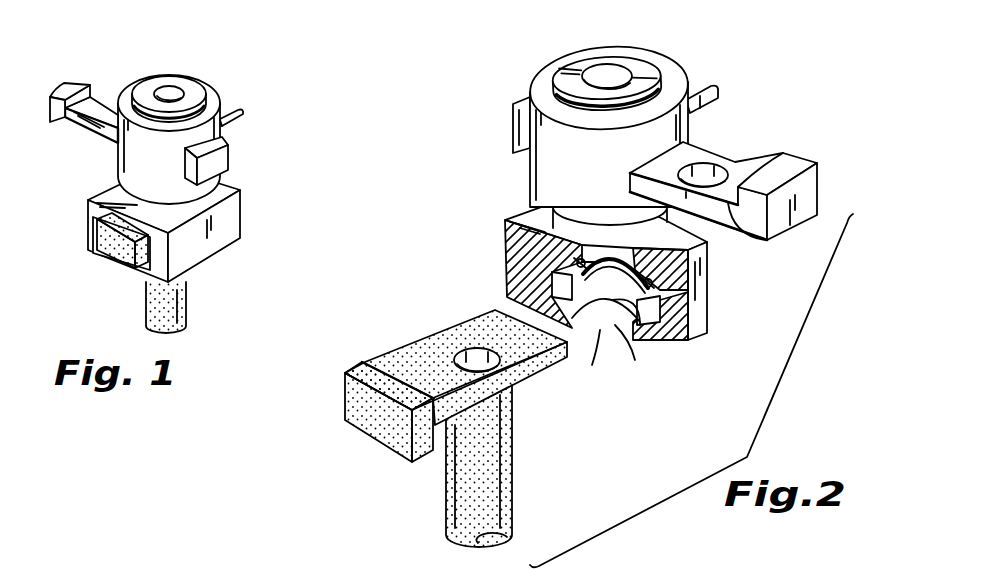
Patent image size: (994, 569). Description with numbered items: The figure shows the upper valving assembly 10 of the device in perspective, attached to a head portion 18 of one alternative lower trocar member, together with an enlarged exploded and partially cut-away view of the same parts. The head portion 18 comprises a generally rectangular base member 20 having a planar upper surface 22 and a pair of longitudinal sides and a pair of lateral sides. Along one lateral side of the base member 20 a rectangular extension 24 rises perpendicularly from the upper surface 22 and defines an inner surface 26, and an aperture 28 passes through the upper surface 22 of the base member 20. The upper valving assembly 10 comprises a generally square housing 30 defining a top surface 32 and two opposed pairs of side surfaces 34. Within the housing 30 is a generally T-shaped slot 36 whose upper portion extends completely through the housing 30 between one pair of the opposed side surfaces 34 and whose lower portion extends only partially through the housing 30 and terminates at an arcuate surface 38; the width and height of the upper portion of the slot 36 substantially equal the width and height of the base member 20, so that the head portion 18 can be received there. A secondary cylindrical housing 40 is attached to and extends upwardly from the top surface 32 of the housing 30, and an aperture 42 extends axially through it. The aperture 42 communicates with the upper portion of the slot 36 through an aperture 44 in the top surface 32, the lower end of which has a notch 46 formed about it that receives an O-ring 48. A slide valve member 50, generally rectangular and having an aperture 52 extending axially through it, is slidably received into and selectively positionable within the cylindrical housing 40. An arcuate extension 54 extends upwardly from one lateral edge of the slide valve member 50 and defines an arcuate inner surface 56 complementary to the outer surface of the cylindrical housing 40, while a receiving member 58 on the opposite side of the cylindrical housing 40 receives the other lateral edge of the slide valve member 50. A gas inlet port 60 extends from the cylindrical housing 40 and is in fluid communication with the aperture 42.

In FIG. 1, the upper valving assembly 10 is at (286, 122).
In FIG. 2, the upper valving assembly 10 is at (766, 84).
In FIG. 2, the head portion 18 is at (434, 321).
In FIG. 2, the base member 20 is at (538, 381).
In FIG. 2, the upper surface 22 is at (423, 365).
In FIG. 1, the rectangular extension 24 is at (110, 247).
In FIG. 2, the rectangular extension 24 is at (350, 368).
In FIG. 1, the inner surface 26 is at (166, 307).
In FIG. 2, the inner surface 26 is at (514, 421).
In FIG. 2, the aperture 28 is at (473, 350).
In FIG. 1, the housing 30 is at (242, 213).
In FIG. 2, the housing 30 is at (681, 340).
In FIG. 1, the top surface 32 is at (112, 193).
In FIG. 2, the top surface 32 is at (530, 212).
In FIG. 1, the side surfaces 34 is at (200, 249).
In FIG. 2, the side surfaces 34 is at (717, 317).
In FIG. 2, the T-shaped slot 36 is at (611, 292).
In FIG. 2, the arcuate surface 38 is at (633, 314).
In FIG. 1, the cylindrical housing 40 is at (213, 97).
In FIG. 2, the cylindrical housing 40 is at (570, 137).
In FIG. 1, the aperture 42 is at (165, 92).
In FIG. 2, the aperture 42 is at (620, 73).
In FIG. 2, the aperture 44 is at (613, 252).
In FIG. 2, the notch 46 is at (556, 262).
In FIG. 2, the O-ring 48 is at (655, 286).
In FIG. 1, the slide valve member 50 is at (100, 116).
In FIG. 2, the slide valve member 50 is at (761, 160).
In FIG. 2, the aperture 52 is at (712, 166).
In FIG. 1, the arcuate extension 54 is at (66, 84).
In FIG. 2, the arcuate extension 54 is at (801, 158).
In FIG. 2, the arcuate inner surface 56 is at (770, 232).
In FIG. 1, the receiving member 58 is at (216, 155).
In FIG. 2, the receiving member 58 is at (520, 123).
In FIG. 1, the gas inlet port 60 is at (221, 123).
In FIG. 2, the gas inlet port 60 is at (715, 92).